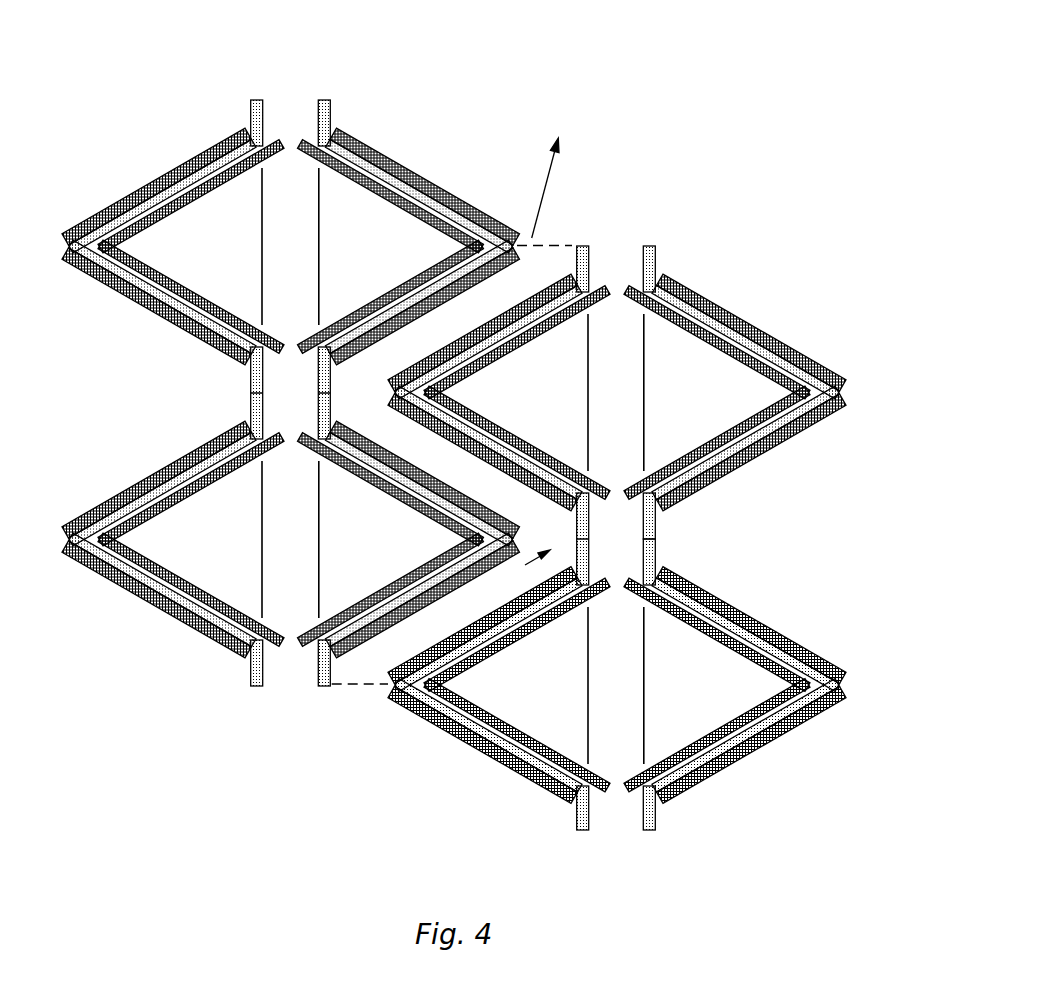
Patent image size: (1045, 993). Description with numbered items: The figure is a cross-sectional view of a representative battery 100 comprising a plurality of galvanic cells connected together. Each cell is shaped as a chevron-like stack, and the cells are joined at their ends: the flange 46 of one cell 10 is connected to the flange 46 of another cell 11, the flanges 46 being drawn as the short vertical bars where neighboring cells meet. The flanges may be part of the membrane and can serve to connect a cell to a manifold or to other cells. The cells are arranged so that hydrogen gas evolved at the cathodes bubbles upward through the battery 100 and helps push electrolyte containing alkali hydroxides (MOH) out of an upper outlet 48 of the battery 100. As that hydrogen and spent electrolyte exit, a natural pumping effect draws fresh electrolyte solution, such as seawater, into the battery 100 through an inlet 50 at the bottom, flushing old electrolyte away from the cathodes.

The battery 100 is at (498, 160).
The galvanic cell 10 is at (744, 284).
The another cell 11 is at (799, 620).
The flange 46 is at (652, 527).
The upper outlet 48 is at (542, 242).
The inlet 50 is at (348, 685).